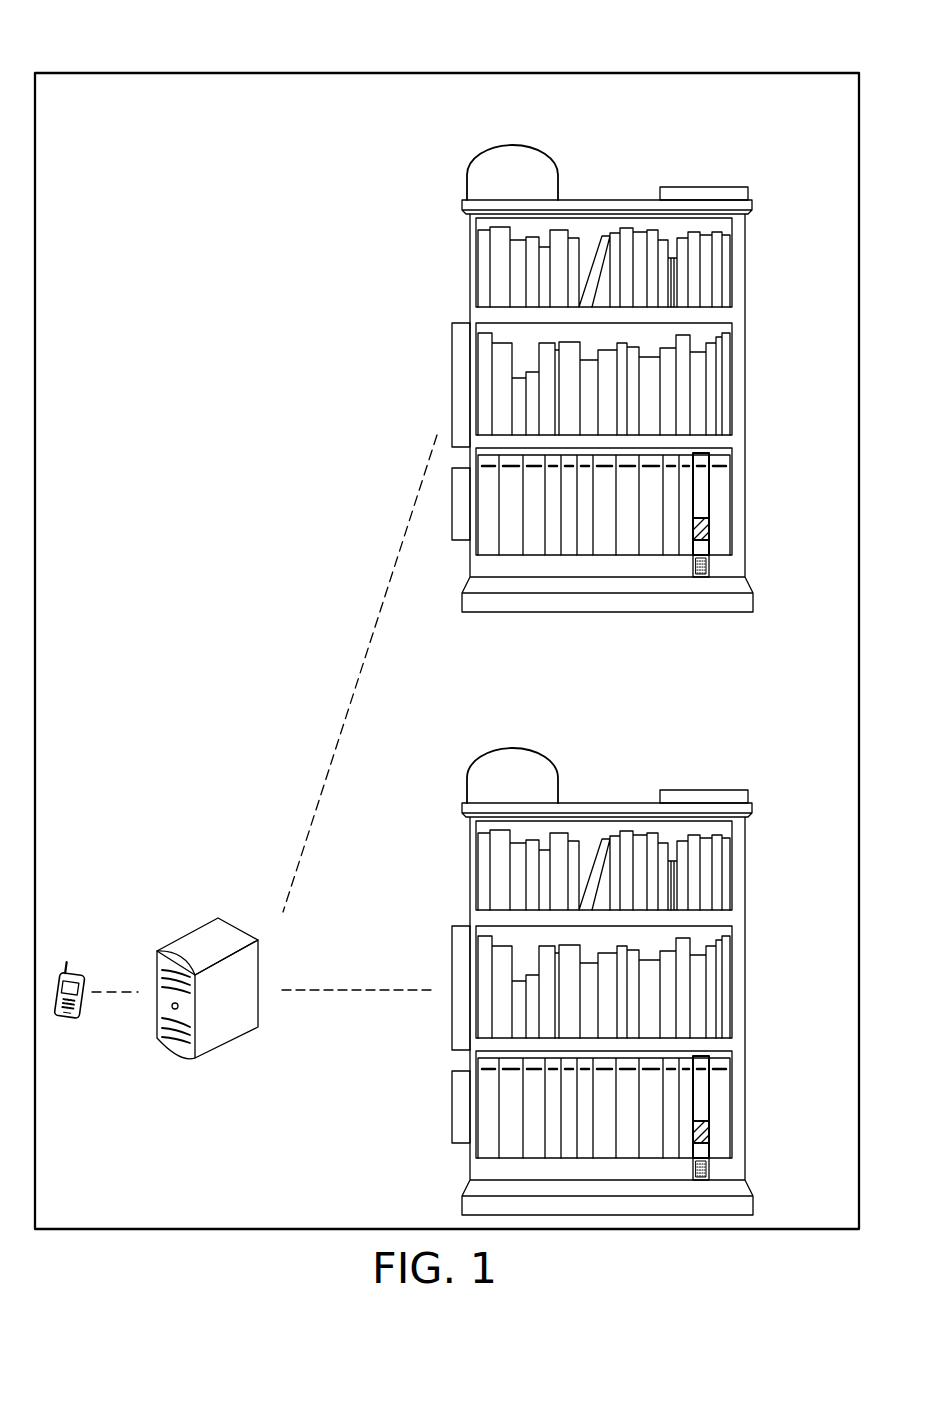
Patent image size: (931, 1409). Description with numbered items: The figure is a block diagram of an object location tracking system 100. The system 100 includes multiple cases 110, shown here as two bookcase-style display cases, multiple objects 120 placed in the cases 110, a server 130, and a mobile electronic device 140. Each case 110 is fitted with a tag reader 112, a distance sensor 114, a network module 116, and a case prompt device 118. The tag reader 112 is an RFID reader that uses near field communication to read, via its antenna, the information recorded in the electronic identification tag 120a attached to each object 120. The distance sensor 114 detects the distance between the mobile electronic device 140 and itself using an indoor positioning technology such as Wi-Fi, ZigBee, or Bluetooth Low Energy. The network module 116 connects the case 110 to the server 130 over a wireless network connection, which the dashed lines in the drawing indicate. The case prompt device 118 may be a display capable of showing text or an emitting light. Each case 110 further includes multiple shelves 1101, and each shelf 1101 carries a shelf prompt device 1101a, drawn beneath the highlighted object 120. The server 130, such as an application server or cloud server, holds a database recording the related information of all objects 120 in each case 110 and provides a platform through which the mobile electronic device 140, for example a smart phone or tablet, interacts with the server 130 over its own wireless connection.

The object location tracking system 100 is at (460, 72).
The case 110 is at (745, 278).
The tag reader 112 is at (745, 195).
The distance sensor 114 is at (458, 375).
The network module 116 is at (455, 527).
The case prompt device 118 is at (516, 166).
The object 120 is at (703, 490).
The electronic identification tag 120a is at (707, 525).
The shelf 1101 is at (733, 554).
The shelf prompt device 1101a is at (710, 568).
The server 130 is at (204, 938).
The mobile electronic device 140 is at (77, 970).